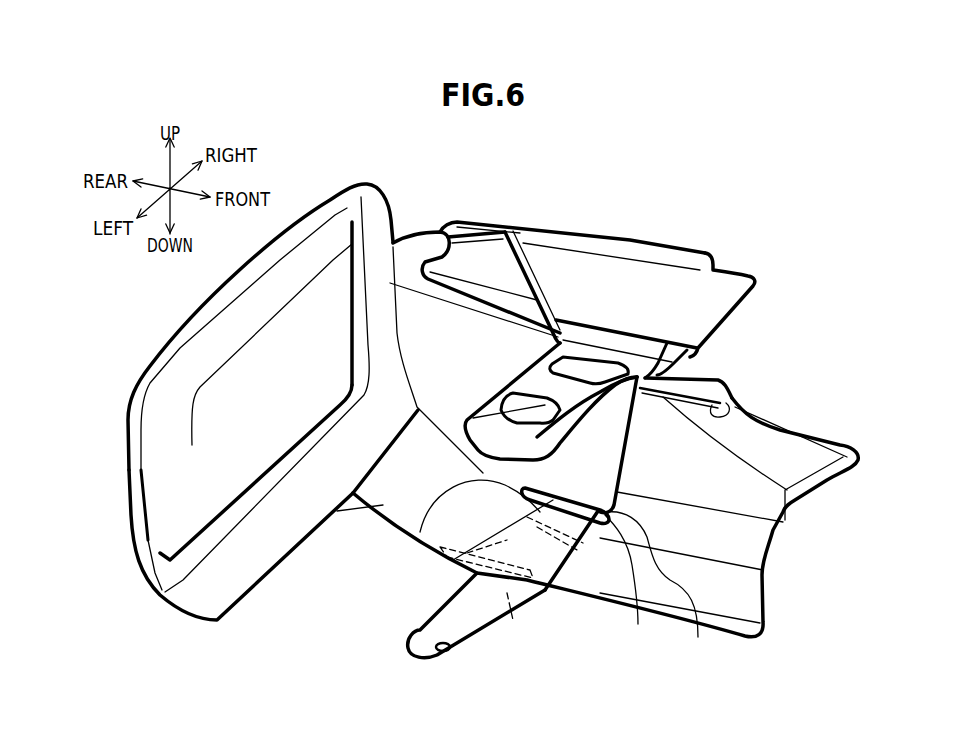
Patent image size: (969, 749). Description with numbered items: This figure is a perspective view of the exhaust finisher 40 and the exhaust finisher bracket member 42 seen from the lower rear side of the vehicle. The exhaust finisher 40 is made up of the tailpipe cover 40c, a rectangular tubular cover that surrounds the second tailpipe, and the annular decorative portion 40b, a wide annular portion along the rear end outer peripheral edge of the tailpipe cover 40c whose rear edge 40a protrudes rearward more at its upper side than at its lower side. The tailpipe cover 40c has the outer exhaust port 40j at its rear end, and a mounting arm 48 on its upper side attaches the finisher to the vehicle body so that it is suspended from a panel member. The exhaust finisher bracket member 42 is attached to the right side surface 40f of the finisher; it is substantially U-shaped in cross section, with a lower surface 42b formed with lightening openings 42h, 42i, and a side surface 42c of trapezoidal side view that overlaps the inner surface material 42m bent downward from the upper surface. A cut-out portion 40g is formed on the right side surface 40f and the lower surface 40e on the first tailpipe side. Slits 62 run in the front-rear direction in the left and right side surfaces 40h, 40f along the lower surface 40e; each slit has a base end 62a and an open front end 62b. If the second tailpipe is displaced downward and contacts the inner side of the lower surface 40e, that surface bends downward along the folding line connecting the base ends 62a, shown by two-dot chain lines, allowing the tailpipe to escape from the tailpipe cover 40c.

The exhaust finisher 40 is at (738, 227).
The rear edge 40a is at (343, 203).
The annular decorative portion 40b is at (148, 597).
The tailpipe cover 40c is at (700, 383).
The lower surface 40e is at (587, 587).
The right side surface 40f is at (598, 462).
The cut-out portion 40g is at (733, 404).
The left side surface 40h is at (458, 577).
The outer exhaust port 40j is at (253, 490).
The exhaust finisher bracket member 42 is at (625, 229).
The lower surface 42b is at (573, 393).
The side surface 42c is at (650, 288).
The lightening opening 42h is at (593, 366).
The lightening opening 42i is at (520, 406).
The inner surface material 42m is at (543, 242).
The mounting arm 48 is at (417, 645).
The slit 62 is at (493, 577).
The base end 62a is at (428, 556).
The front end 62b is at (537, 587).